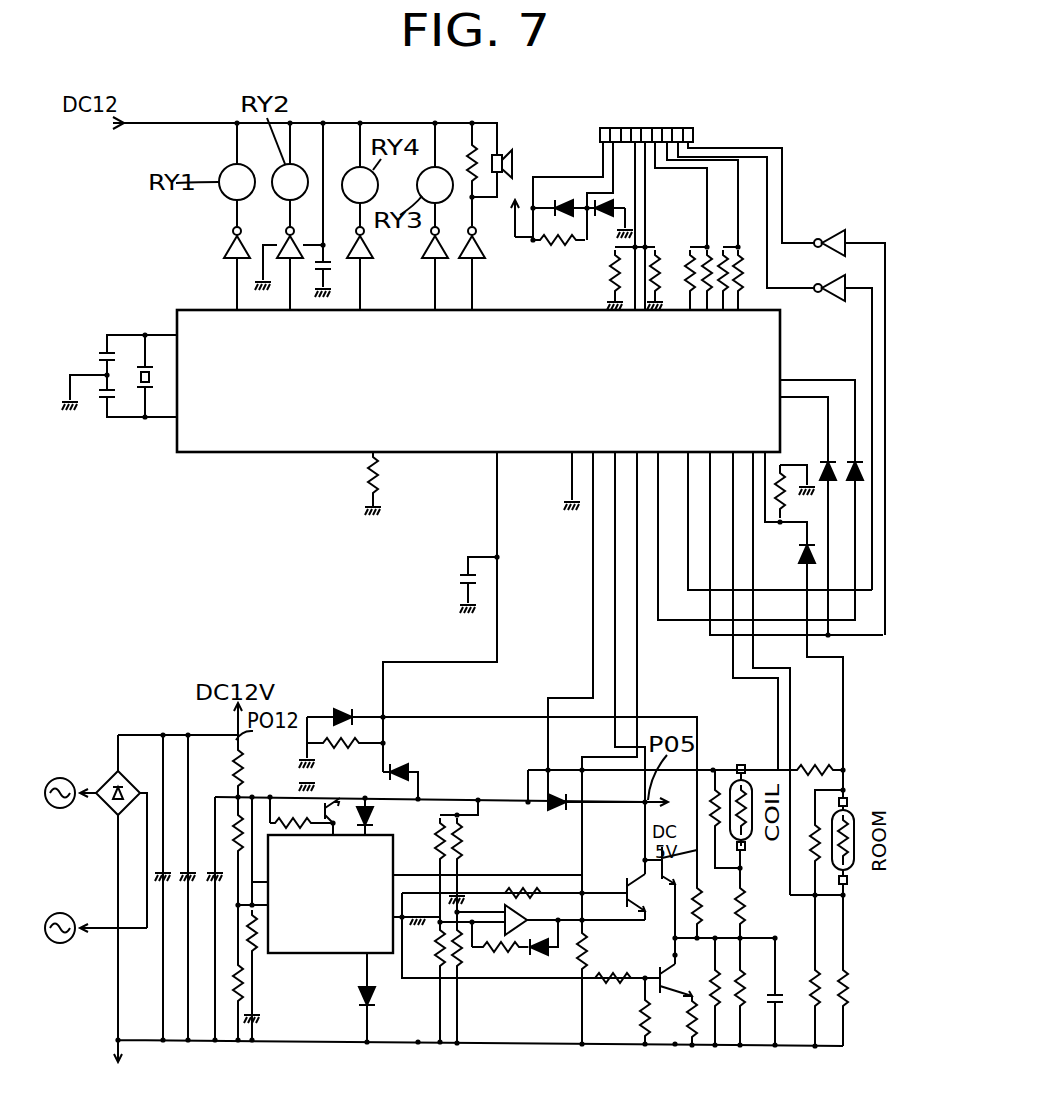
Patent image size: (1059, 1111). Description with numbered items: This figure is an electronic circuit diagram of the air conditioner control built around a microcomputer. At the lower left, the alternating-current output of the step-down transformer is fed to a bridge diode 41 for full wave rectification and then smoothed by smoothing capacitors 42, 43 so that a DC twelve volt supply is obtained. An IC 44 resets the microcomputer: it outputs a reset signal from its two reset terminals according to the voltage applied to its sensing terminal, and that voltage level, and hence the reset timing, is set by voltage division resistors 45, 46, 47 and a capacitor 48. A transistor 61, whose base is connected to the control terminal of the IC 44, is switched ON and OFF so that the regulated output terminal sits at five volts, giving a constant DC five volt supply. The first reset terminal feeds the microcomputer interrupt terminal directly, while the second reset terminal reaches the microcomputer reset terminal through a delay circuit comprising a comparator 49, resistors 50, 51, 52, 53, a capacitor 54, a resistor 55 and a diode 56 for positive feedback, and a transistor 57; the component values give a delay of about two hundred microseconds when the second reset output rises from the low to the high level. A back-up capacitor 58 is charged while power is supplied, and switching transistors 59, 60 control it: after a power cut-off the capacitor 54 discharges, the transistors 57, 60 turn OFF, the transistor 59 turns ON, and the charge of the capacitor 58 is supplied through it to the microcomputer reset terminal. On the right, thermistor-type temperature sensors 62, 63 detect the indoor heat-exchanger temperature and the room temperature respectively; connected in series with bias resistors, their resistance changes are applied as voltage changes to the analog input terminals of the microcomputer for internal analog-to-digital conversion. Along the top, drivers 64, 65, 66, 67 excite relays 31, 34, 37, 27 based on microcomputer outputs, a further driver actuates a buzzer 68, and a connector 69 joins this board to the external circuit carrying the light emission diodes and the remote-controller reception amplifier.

The relay 27 is at (440, 167).
The relay 31 is at (230, 166).
The relay 34 is at (298, 164).
The relay 37 is at (358, 167).
The bridge diode 41 is at (113, 775).
The smoothing capacitor 42 is at (155, 882).
The smoothing capacitor 43 is at (177, 870).
The IC 44 is at (290, 947).
The voltage division resistor 45 is at (235, 777).
The voltage division resistor 46 is at (233, 830).
The voltage division resistor 47 is at (230, 992).
The capacitor 48 is at (212, 882).
The comparator 49 is at (523, 915).
The resistor 50 is at (458, 860).
The resistor 51 is at (438, 860).
The resistor 52 is at (462, 975).
The resistor 53 is at (432, 948).
The capacitor 54 is at (458, 893).
The resistor 55 is at (503, 953).
The diode 56 is at (210, 455).
The transistor 57 is at (634, 885).
The back-up capacitor 58 is at (300, 760).
The switching transistor 59 is at (668, 858).
The switching transistor 60 is at (668, 970).
The transistor 61 is at (332, 808).
The temperature sensor 62 is at (731, 770).
The temperature sensor 63 is at (851, 872).
The driver 64 is at (228, 242).
The driver 65 is at (283, 242).
The driver 66 is at (371, 246).
The driver 67 is at (430, 250).
The buzzer 68 is at (514, 165).
The connector 69 is at (600, 127).